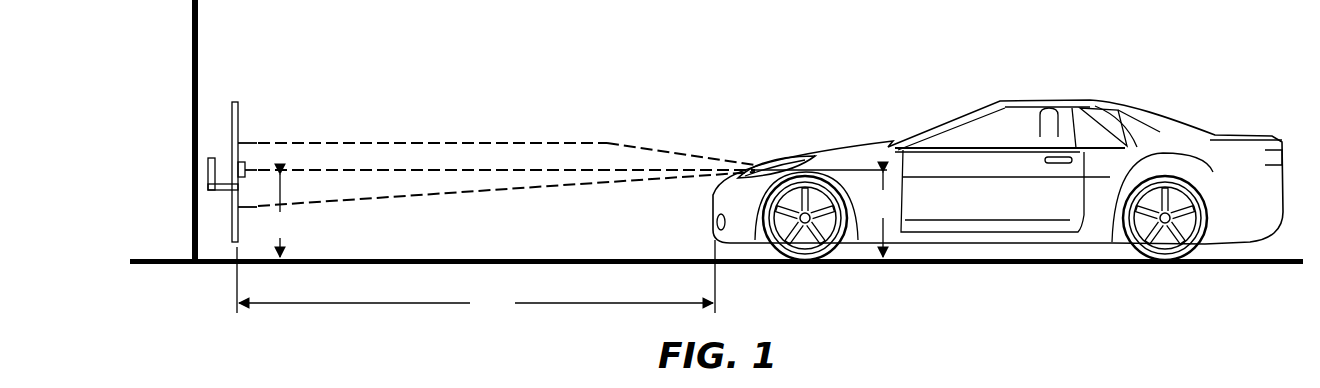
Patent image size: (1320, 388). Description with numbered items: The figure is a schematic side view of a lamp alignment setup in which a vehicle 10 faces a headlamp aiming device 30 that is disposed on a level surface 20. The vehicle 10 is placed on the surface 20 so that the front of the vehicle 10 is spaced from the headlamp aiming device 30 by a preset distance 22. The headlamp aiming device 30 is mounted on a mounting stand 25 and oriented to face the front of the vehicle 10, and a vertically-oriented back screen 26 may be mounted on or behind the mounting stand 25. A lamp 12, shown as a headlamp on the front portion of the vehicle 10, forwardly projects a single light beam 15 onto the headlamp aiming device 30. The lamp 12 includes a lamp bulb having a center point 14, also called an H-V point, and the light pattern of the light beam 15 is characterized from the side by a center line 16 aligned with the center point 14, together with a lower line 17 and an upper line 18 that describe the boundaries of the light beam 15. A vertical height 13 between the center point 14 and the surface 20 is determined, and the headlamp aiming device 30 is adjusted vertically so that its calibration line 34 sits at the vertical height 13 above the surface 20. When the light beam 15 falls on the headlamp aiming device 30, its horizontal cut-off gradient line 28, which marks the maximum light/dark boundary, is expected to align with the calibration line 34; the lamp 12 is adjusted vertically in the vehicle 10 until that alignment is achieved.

The vehicle 10 is at (899, 126).
The lamp 12 is at (797, 162).
The vertical height 13 is at (292, 234).
The center point 14 is at (766, 171).
The light beam 15 is at (619, 141).
The center line 16 is at (530, 170).
The lower line 17 is at (493, 189).
The upper line 18 is at (568, 143).
The level surface 20 is at (841, 266).
The preset distance 22 is at (504, 315).
The mounting stand 25 is at (211, 158).
The back screen 26 is at (192, 143).
The cut-off gradient line 28 is at (253, 168).
The headlamp aiming device 30 is at (236, 102).
The calibration line 34 is at (242, 150).